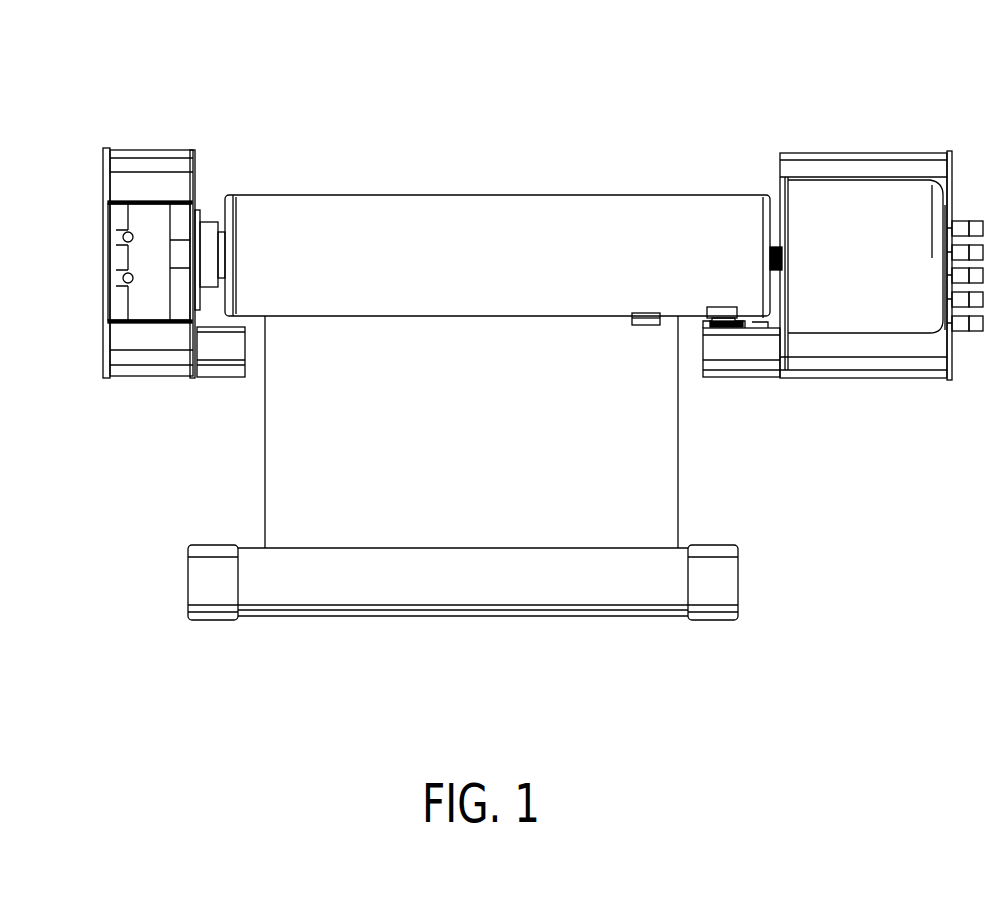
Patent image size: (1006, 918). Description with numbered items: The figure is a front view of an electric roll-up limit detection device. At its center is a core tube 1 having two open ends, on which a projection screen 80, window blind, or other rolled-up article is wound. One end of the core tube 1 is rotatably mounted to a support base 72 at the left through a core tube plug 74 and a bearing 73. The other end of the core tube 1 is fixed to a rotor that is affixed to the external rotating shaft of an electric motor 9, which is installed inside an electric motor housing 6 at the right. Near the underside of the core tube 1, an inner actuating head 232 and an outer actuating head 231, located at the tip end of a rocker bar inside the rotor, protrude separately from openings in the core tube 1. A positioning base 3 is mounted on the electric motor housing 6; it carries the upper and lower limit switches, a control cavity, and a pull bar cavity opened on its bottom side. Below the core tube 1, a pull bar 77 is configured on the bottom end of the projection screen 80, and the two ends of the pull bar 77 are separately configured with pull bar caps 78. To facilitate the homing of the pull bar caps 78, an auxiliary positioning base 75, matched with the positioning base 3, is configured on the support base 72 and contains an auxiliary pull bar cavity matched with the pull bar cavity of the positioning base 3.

The core tube 1 is at (746, 213).
The positioning base 3 is at (742, 354).
The electric motor housing 6 is at (838, 157).
The electric motor 9 is at (920, 185).
The support base 72 is at (157, 205).
The bearing 73 is at (213, 245).
The core tube plug 74 is at (233, 197).
The auxiliary positioning base 75 is at (228, 350).
The pull bar 77 is at (455, 581).
The pull bar caps 78 is at (218, 582).
The projection screen 80 is at (525, 255).
The outer actuating head 231 is at (727, 312).
The inner actuating head 232 is at (641, 320).